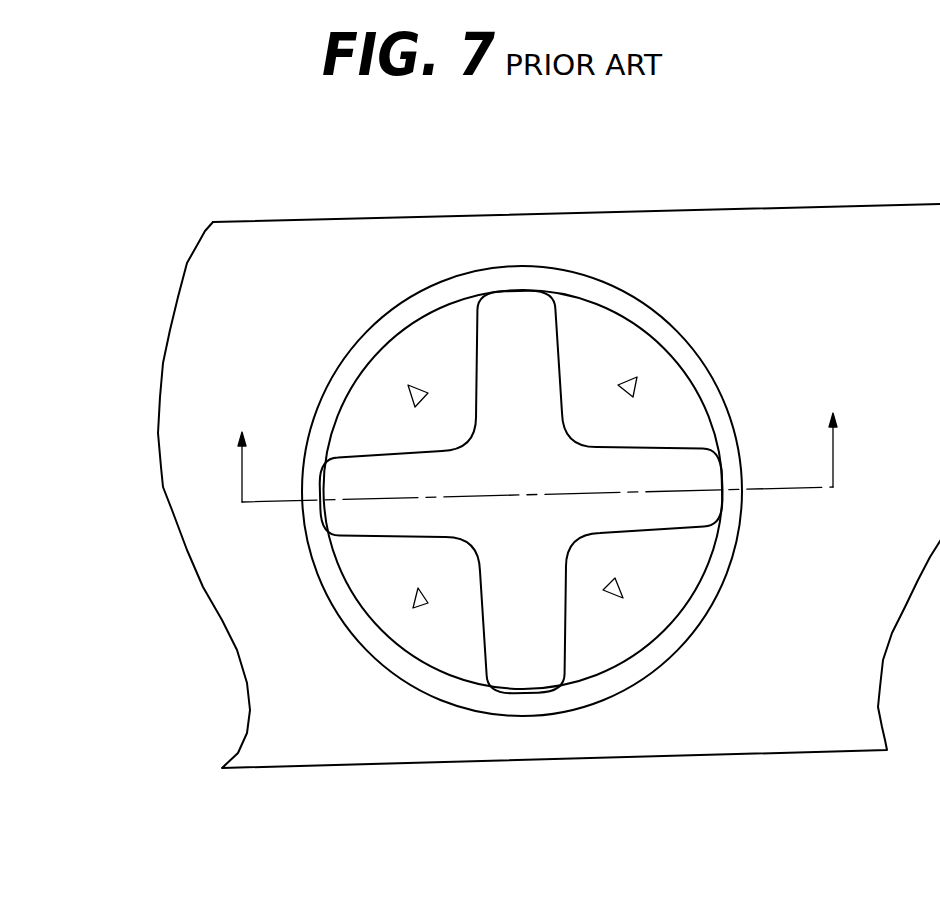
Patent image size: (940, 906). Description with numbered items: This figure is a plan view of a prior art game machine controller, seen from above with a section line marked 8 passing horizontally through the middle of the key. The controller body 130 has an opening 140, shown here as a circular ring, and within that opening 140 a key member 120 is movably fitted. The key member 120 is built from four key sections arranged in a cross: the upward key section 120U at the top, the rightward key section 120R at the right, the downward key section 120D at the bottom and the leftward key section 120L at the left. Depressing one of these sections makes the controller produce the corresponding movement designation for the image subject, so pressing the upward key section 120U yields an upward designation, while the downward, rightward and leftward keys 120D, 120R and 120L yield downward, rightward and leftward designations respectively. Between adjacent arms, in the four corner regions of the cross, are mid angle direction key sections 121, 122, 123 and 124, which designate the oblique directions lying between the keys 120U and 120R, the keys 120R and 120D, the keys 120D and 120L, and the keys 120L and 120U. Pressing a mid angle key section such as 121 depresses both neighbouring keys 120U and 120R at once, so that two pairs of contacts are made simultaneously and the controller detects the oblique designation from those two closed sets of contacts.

The controller body 130 is at (293, 267).
The key member 120 is at (521, 463).
The upward key section 120U is at (518, 370).
The rightward key section 120R is at (643, 506).
The downward key section 120D is at (524, 631).
The leftward key section 120L is at (399, 512).
The opening 140 is at (699, 391).
The mid angle direction key section 121 is at (644, 399).
The mid angle direction key section 122 is at (609, 603).
The mid angle direction key section 123 is at (430, 613).
The mid angle direction key section 124 is at (429, 410).
The section line 8- 8 is at (535, 440).